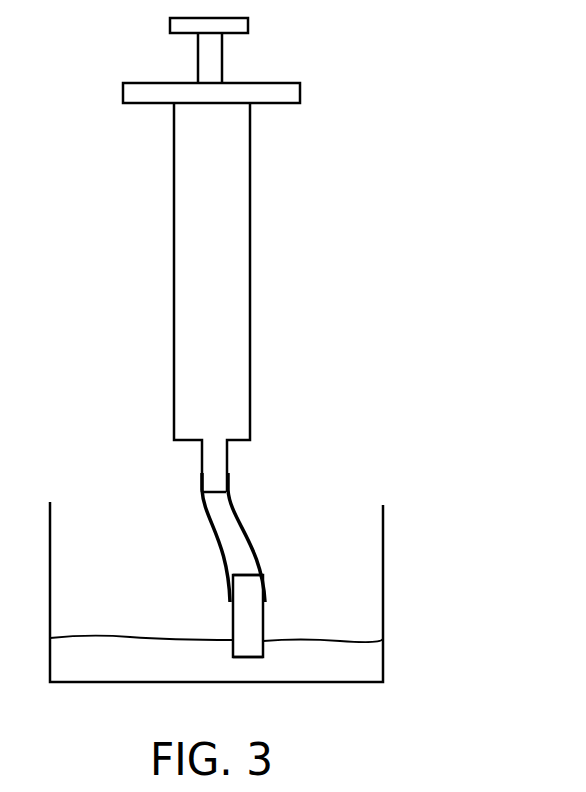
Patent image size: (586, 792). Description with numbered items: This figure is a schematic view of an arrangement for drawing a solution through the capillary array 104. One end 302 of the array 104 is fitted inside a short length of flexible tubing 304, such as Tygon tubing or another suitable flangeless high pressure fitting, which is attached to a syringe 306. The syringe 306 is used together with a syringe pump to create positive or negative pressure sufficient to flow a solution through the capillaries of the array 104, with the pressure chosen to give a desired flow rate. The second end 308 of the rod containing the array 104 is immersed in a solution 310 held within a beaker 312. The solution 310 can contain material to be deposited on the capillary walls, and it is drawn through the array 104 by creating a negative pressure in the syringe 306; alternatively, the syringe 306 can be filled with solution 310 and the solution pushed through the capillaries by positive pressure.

The syringe 306 is at (274, 282).
The flexible tubing 304 is at (240, 521).
The one end of the array 302 is at (242, 572).
The capillary array 104 is at (248, 622).
The beaker 312 is at (383, 536).
The solution 310 is at (320, 648).
The second end 308 is at (243, 660).